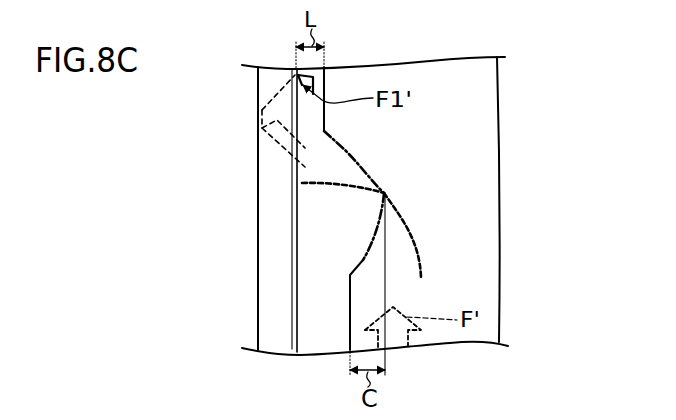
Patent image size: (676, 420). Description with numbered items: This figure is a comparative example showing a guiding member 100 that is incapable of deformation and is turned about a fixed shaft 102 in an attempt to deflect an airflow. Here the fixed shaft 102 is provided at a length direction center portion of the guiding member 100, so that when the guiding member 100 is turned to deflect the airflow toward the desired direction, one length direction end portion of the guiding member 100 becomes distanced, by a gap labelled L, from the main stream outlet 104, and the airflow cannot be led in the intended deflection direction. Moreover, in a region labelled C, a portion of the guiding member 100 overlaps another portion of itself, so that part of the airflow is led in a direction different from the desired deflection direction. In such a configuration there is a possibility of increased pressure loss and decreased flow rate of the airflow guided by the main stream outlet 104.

The guiding member 100 is at (350, 158).
The fixed shaft 102 is at (384, 193).
The main stream outlet 104 is at (300, 230).